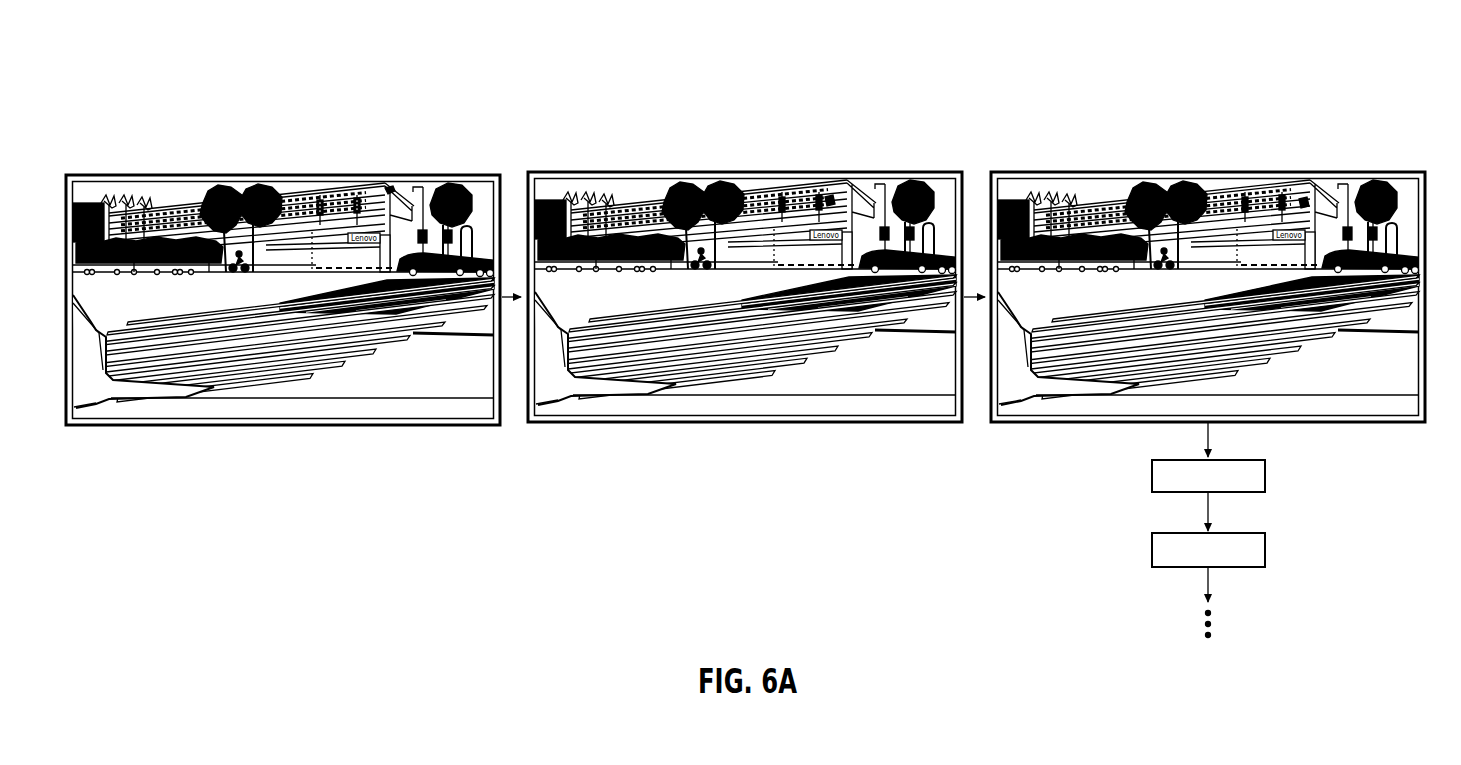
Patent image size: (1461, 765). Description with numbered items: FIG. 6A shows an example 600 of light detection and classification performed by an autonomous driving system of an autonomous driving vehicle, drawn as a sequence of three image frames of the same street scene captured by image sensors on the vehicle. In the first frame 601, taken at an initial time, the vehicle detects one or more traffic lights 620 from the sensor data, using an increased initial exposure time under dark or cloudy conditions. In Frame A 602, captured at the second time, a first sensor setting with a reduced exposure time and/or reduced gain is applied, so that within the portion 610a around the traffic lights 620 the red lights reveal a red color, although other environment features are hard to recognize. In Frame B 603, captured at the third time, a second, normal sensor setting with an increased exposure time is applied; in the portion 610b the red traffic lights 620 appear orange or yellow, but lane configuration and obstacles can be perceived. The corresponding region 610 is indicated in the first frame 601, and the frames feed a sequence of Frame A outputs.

The example of light detection and classification 600 is at (150, 82).
The first image frame at time T1 601 is at (146, 136).
The Frame A 602 is at (607, 136).
The Frame B 603 is at (1070, 136).
The object in first frame 610 is at (392, 189).
The portion of Frame A 610a is at (833, 198).
The portion of Frame B 610b is at (1307, 200).
The traffic lights 620 is at (350, 200).